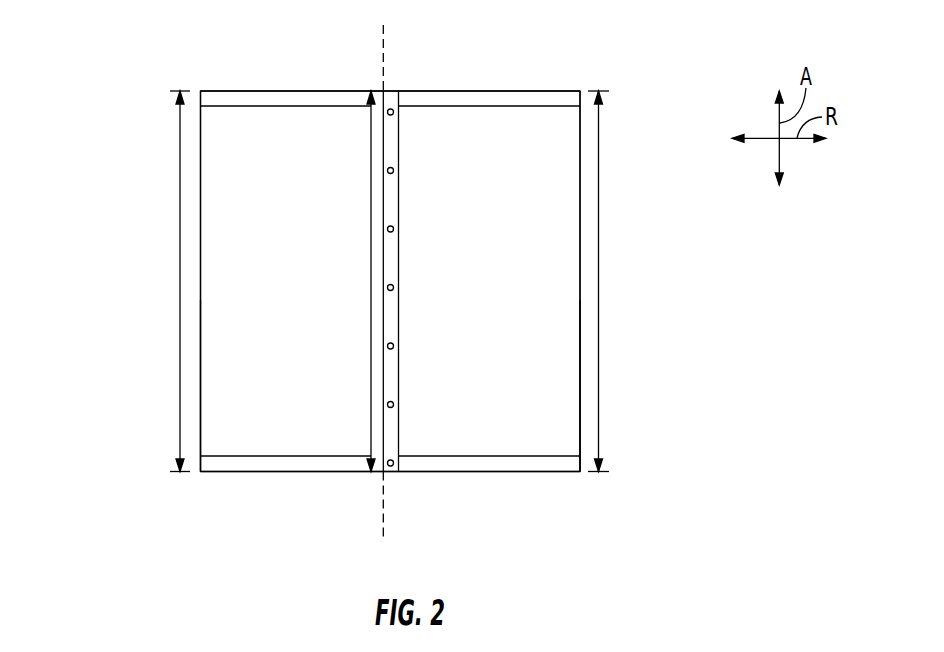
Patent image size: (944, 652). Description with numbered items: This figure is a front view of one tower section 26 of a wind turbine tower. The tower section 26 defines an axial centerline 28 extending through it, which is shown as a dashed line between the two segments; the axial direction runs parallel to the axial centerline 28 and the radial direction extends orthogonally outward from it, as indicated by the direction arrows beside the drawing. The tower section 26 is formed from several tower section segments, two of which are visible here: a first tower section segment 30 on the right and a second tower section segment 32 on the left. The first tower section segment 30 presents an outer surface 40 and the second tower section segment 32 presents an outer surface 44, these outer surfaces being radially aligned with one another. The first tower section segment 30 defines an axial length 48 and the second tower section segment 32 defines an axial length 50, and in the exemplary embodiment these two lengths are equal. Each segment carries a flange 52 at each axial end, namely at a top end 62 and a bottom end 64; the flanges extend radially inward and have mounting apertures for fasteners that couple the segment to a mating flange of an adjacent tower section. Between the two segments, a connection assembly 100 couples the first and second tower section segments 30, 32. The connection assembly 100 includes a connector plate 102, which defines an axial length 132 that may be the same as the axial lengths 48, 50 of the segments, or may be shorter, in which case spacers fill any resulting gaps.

The tower section 26 is at (104, 139).
The axial centerline 28 is at (382, 515).
The first tower section segment 30 is at (560, 443).
The second tower section segment 32 is at (252, 442).
The outer surface 40 is at (505, 293).
The outer surface 44 is at (302, 293).
The axial length 48 is at (598, 168).
The axial length 50 is at (180, 268).
The flange 52 is at (228, 98).
The top end 62 is at (298, 91).
The bottom end 64 is at (358, 473).
The connection assembly 100 is at (405, 53).
The connector plate 102 is at (393, 385).
The axial length 132 is at (371, 197).